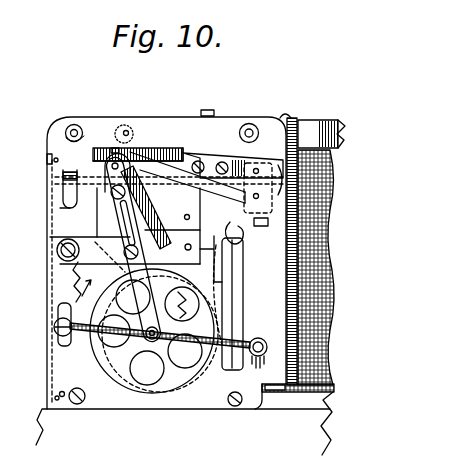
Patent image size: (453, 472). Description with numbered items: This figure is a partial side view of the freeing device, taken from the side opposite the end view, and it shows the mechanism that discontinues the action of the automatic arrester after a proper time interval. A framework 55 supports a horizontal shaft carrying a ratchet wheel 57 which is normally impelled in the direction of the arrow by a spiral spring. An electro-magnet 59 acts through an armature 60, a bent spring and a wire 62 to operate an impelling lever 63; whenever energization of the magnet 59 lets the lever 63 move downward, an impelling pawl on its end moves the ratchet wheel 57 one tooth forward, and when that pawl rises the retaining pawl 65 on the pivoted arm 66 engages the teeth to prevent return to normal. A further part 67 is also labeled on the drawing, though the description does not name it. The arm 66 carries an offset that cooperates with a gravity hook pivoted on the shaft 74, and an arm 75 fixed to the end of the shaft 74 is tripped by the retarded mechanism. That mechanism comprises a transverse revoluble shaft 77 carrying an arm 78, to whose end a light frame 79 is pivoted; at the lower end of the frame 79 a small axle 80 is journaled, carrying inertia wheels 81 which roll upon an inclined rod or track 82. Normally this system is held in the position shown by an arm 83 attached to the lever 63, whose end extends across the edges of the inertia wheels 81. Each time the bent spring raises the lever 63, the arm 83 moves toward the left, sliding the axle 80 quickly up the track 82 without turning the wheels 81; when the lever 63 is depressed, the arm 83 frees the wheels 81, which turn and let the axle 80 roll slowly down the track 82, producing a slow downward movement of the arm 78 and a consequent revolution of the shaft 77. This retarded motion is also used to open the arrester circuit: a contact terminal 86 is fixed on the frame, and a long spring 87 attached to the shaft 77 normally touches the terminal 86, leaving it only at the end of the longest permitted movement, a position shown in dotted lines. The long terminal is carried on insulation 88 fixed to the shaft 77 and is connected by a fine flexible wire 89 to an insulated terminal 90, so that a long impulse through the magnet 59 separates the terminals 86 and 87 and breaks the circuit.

The framework 55 is at (158, 127).
The ratchet wheel 57 is at (72, 297).
The electro-magnet 59 is at (309, 393).
The armature 60 is at (280, 390).
The wire 62 is at (243, 255).
The impelling lever 63 is at (72, 170).
The retaining pawl 65 is at (114, 222).
The pivoted arm 66 is at (172, 226).
The guide member 67 is at (60, 216).
The shaft 74 is at (127, 132).
The arm 75 is at (142, 198).
The transverse revoluble shaft 77 is at (252, 170).
The arm 78 is at (162, 167).
The light frame 79 is at (168, 258).
The small axle 80 is at (151, 338).
The inertia wheels 81 is at (175, 376).
The inclined rod or track 82 is at (259, 338).
The arm 83 is at (232, 276).
The contact terminal 86 is at (70, 171).
The long spring 87 is at (102, 186).
The insulation 88 is at (250, 200).
The fine flexible wire 89 is at (248, 118).
The insulated terminal 90 is at (209, 112).